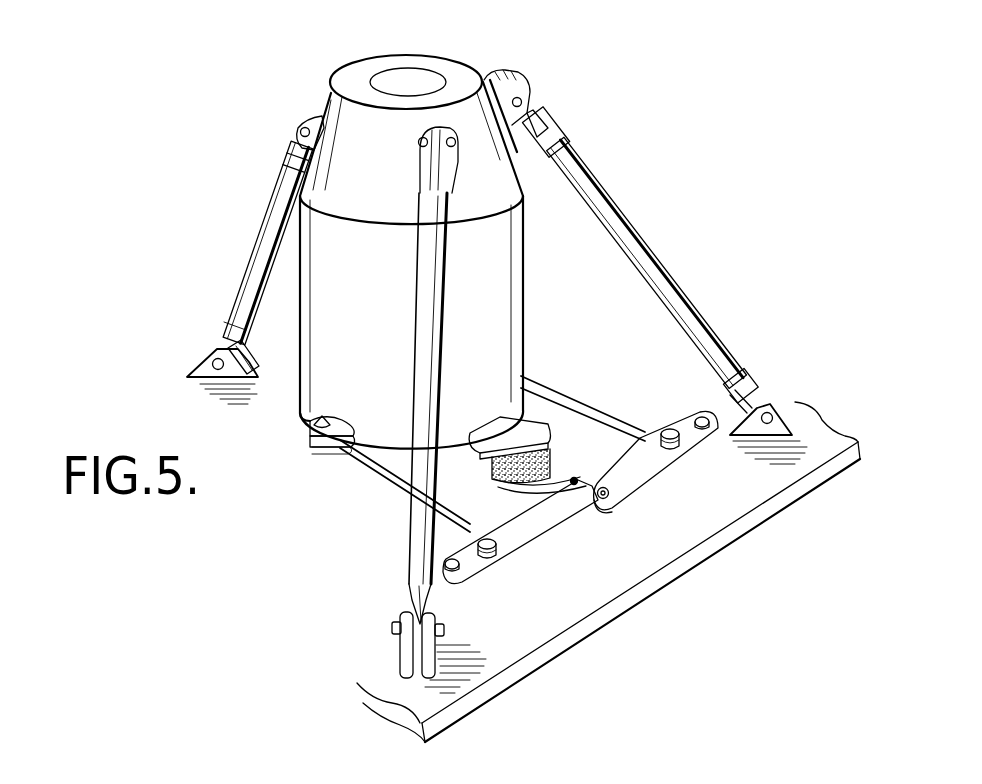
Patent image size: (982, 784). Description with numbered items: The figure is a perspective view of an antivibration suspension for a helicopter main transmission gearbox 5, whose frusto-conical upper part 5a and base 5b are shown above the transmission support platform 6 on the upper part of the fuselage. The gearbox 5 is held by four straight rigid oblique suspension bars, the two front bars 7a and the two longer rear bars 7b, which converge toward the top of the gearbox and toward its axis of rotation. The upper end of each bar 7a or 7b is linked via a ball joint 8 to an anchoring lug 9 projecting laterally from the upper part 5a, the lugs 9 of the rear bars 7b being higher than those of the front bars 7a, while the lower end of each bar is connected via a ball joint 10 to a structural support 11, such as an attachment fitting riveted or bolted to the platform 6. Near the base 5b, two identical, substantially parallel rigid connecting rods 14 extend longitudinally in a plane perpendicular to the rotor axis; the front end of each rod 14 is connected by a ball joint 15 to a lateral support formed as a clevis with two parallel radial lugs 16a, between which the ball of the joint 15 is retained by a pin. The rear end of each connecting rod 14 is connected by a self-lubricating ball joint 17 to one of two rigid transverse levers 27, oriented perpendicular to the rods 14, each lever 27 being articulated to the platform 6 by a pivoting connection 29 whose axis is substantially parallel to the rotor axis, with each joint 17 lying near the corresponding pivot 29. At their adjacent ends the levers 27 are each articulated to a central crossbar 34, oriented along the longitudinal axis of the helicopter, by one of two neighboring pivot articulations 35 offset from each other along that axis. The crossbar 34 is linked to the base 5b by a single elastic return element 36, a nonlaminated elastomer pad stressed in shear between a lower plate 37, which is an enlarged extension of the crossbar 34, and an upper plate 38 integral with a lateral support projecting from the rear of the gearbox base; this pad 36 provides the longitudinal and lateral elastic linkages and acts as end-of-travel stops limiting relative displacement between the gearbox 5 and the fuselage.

The main transmission gearbox 5 is at (535, 211).
The frusto-conical upper part 5a is at (465, 118).
The base of the transmission gearbox 5b is at (500, 306).
The transmission support platform 6 is at (606, 592).
The front bars 7a is at (268, 232).
The rear bars 7b is at (618, 232).
The ball joint 8 is at (514, 118).
The anchoring lug 9 is at (512, 124).
The ball joint 10 is at (215, 357).
The structural support 11 is at (205, 368).
The connecting rods 14 is at (398, 488).
The ball joint 15 is at (324, 430).
The lugs 16a is at (312, 430).
The ball joint 17 is at (708, 443).
The transverse levers 27 is at (648, 452).
The pivoting connection 29 is at (699, 417).
The central crossbar 34 is at (592, 506).
The pivot articulations 35 is at (628, 480).
The elastic return element 36 is at (554, 448).
The lower plate 37 is at (512, 480).
The upper plate 38 is at (530, 422).